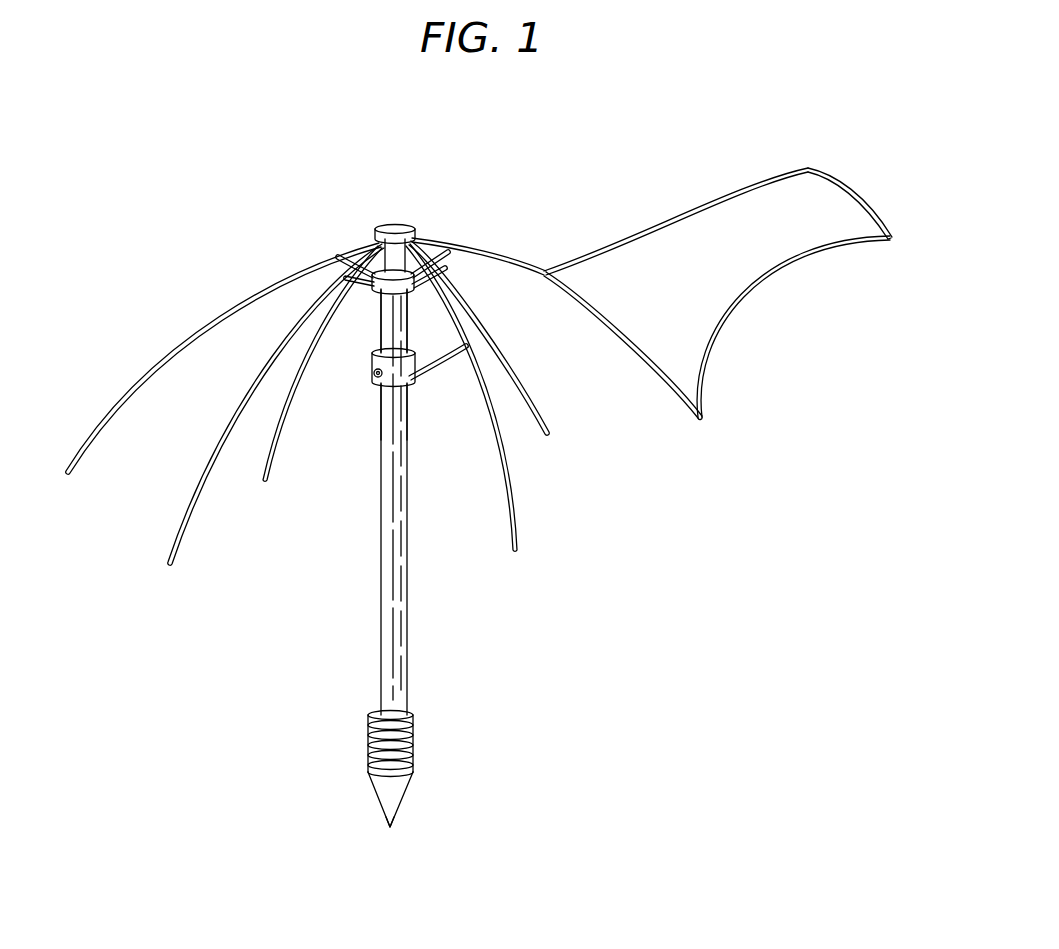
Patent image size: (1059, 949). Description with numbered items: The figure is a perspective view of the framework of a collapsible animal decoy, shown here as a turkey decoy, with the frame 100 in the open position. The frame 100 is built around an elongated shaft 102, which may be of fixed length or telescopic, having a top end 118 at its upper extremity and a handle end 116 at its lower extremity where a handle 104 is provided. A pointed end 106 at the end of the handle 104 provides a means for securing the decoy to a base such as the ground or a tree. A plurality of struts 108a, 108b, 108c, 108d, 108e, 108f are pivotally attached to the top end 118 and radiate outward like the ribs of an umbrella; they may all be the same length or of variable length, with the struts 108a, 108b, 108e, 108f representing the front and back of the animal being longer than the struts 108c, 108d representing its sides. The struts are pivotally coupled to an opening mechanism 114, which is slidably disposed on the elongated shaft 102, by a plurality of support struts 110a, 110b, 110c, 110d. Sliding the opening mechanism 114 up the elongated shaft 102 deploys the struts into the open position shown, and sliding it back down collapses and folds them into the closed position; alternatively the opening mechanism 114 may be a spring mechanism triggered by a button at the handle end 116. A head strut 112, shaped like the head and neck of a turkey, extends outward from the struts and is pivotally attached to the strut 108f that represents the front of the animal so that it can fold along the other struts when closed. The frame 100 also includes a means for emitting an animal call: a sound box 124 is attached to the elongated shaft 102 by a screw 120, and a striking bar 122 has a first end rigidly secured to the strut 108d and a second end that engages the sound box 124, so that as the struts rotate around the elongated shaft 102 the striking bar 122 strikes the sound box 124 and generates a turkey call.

The frame 100 is at (629, 121).
The elongated shaft 102 is at (395, 640).
The handle 104 is at (403, 753).
The pointed end 106 is at (403, 790).
The strut 108a is at (160, 358).
The strut 108b is at (210, 460).
The strut 108c is at (277, 445).
The strut 108d is at (520, 528).
The strut 108e is at (538, 393).
The strut 108f is at (521, 252).
The support strut 110a is at (357, 230).
The support strut 110b is at (372, 284).
The support strut 110c is at (413, 290).
The support strut 110d is at (459, 230).
The head strut 112 is at (755, 178).
The opening mechanism 114 is at (383, 300).
The handle end 116 is at (390, 828).
The top end 118 is at (394, 226).
The screw 120 is at (370, 386).
The striking bar 122 is at (437, 372).
The sound box 124 is at (410, 388).